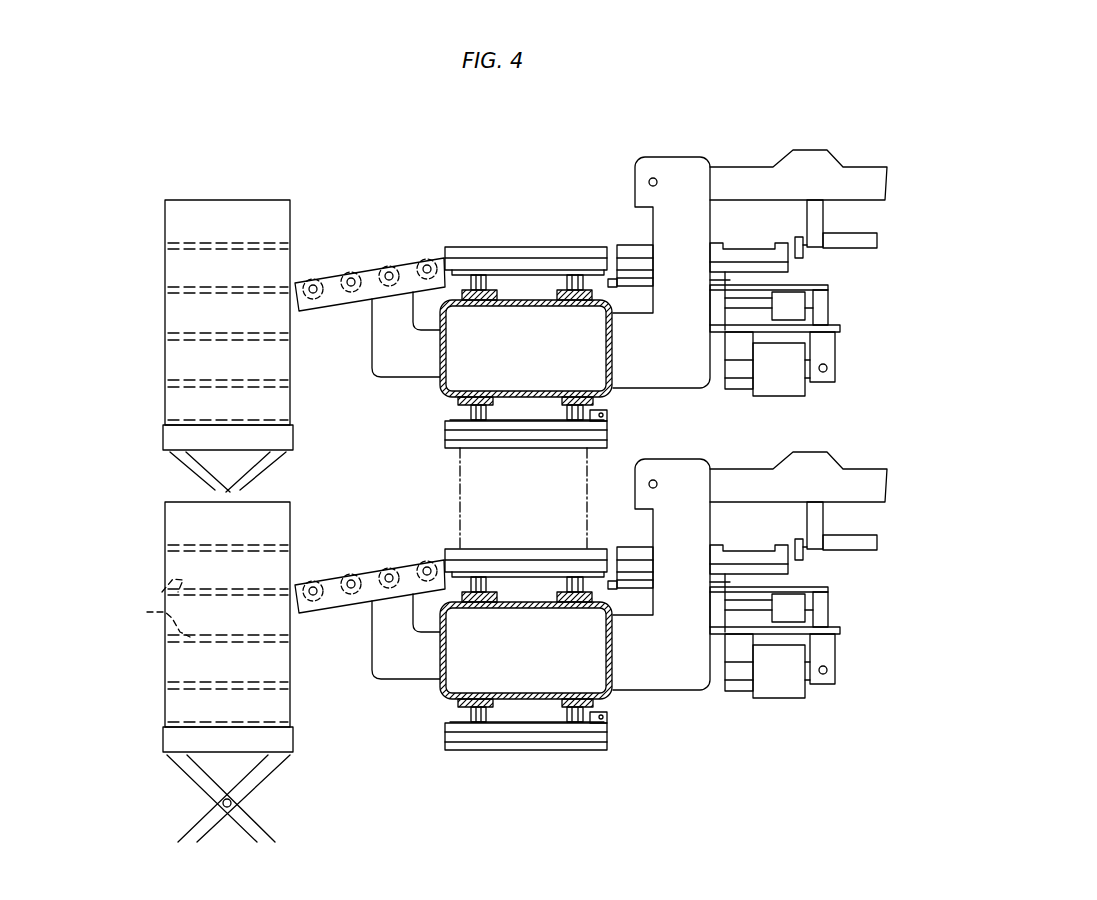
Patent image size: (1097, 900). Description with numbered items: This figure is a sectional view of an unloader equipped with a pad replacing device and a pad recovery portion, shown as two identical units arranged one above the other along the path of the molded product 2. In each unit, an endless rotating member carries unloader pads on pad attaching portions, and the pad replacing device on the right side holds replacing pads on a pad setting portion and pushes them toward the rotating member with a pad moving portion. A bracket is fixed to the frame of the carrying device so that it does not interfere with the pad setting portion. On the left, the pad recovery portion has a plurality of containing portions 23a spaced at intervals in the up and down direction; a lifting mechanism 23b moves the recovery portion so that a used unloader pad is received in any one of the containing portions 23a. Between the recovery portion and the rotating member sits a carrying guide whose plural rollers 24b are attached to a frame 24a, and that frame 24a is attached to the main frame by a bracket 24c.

The molded product 2 is at (467, 463).
The containing portion 23a is at (146, 608).
The lifting mechanism 23b is at (262, 801).
The frame 24a is at (370, 615).
The roller 24b is at (355, 557).
The bracket 24c is at (377, 660).